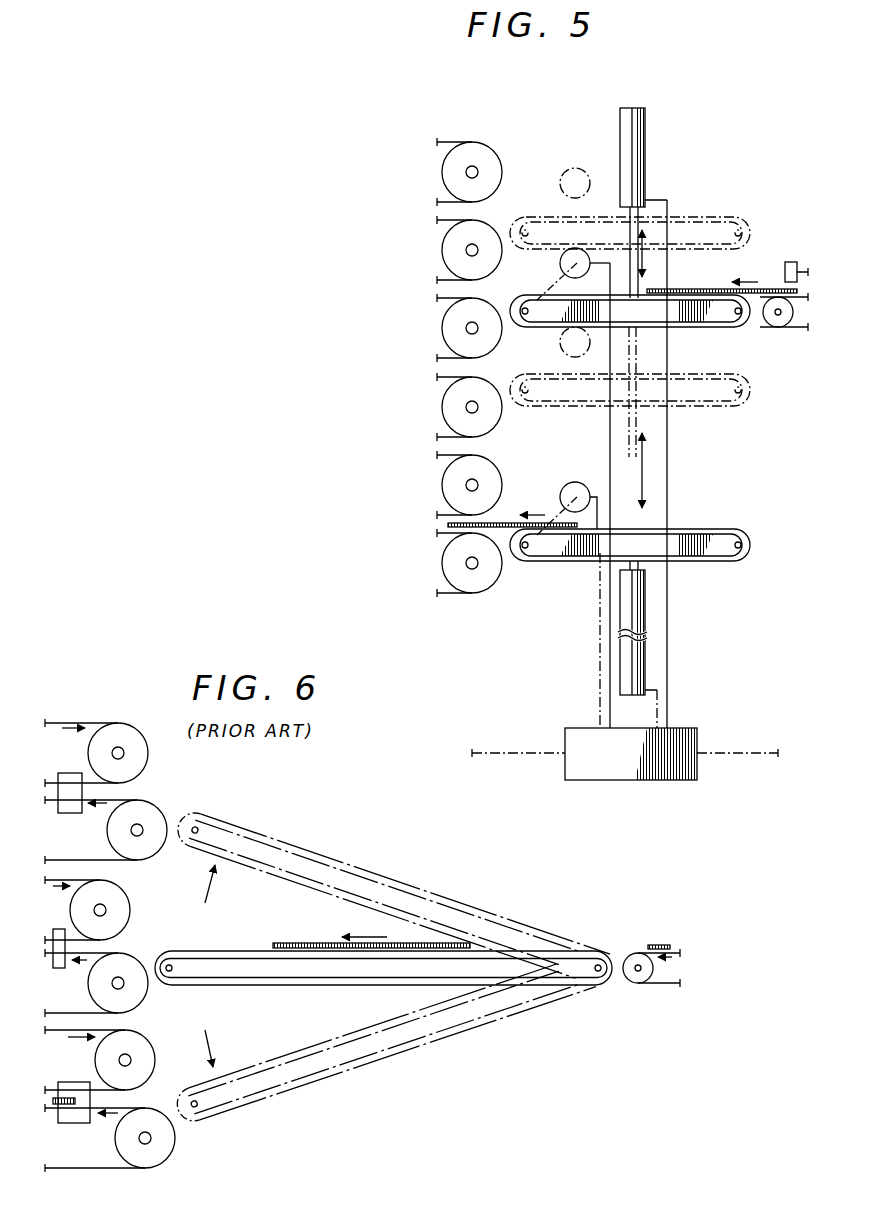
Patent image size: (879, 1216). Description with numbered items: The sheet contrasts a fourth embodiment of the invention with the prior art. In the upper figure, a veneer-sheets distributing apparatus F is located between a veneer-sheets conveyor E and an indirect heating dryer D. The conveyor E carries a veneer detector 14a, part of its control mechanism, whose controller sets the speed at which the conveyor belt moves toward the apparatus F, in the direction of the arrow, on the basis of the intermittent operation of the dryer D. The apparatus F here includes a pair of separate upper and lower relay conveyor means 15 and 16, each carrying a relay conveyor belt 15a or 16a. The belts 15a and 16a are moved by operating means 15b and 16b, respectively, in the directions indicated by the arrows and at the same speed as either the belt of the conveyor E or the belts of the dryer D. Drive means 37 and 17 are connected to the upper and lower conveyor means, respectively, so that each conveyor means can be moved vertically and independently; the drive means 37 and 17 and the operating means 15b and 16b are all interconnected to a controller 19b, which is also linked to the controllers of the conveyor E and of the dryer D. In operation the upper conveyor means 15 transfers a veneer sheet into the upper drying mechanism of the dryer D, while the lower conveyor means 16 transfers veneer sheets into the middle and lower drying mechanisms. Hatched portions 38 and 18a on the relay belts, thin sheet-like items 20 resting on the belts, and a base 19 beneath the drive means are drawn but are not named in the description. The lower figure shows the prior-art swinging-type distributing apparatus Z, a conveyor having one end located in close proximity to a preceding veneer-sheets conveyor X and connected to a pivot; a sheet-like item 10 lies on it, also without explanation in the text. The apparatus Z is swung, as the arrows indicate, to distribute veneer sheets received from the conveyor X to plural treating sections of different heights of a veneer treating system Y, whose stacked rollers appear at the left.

In FIG. 5, the drive means 37 is at (622, 156).
In FIG. 5, the upper relay conveyor means 15 is at (672, 279).
In FIG. 5, the relay conveyor belt 15a is at (686, 328).
In FIG. 5, the operating means 15b is at (572, 267).
In FIG. 5, the belt portion 38 is at (563, 324).
In FIG. 5, the lower relay conveyor means 16 is at (676, 503).
In FIG. 5, the relay conveyor belt 16a is at (700, 527).
In FIG. 5, the operating means 16b is at (566, 489).
In FIG. 5, the belt portion 18a is at (556, 550).
In FIG. 5, the sheet / plate 20 is at (757, 288).
In FIG. 5, the veneer detector 14a is at (792, 262).
In FIG. 5, the drive means 17 is at (640, 670).
In FIG. 5, the base 19 is at (582, 718).
In FIG. 5, the controller 19b is at (685, 728).
In FIG. 5, the indirect heating dryer D is at (447, 622).
In FIG. 5, the veneer-sheets conveyor E is at (786, 336).
In FIG. 5, the veneer-sheets distributing apparatus F is at (691, 173).
In FIG. 6, the sheet 10 is at (298, 947).
In FIG. 6, the preceding veneer-sheets conveyor X is at (660, 1007).
In FIG. 6, the veneer treating system Y is at (105, 1193).
In FIG. 6, the swinging-type distributing apparatus Z is at (372, 1000).